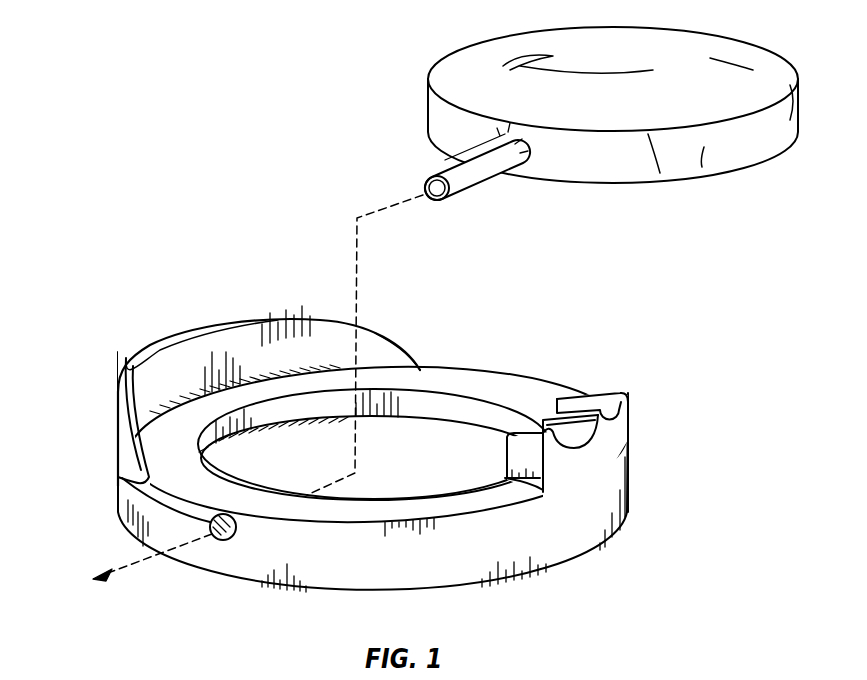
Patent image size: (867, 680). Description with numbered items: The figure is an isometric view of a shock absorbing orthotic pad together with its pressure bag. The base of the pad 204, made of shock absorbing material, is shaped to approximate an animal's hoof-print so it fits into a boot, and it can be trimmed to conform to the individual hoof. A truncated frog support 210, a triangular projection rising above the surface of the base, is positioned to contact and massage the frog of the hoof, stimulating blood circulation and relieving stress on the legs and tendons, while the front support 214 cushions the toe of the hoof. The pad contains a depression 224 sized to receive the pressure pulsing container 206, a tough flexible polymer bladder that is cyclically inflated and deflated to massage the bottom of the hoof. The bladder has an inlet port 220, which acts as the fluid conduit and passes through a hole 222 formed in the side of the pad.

The base of the shock absorbing orthotic pad 204 is at (605, 487).
The pressure pulsing container 206 is at (716, 38).
The truncated frog support 210 is at (613, 391).
The front support 214 is at (175, 340).
The inlet port 220 is at (450, 170).
The hole 222 is at (128, 482).
The depression 224 is at (462, 435).